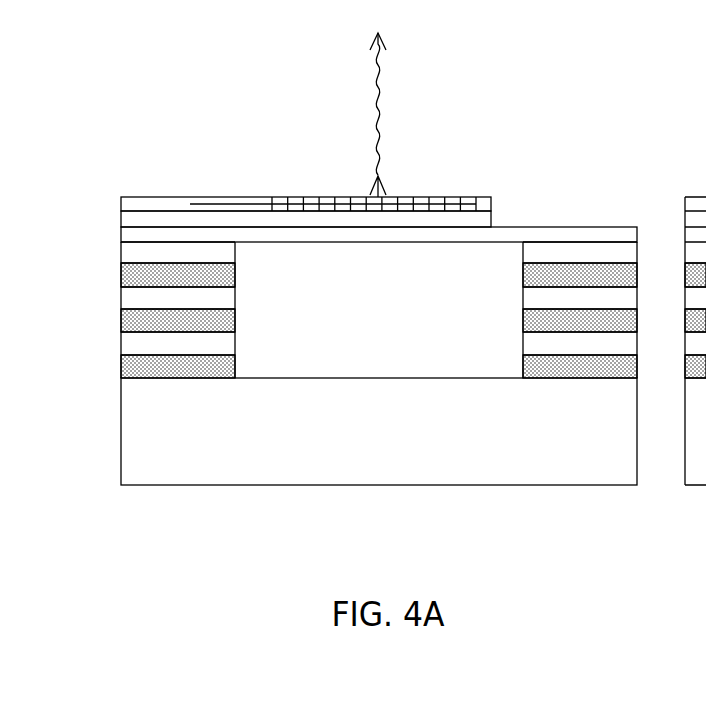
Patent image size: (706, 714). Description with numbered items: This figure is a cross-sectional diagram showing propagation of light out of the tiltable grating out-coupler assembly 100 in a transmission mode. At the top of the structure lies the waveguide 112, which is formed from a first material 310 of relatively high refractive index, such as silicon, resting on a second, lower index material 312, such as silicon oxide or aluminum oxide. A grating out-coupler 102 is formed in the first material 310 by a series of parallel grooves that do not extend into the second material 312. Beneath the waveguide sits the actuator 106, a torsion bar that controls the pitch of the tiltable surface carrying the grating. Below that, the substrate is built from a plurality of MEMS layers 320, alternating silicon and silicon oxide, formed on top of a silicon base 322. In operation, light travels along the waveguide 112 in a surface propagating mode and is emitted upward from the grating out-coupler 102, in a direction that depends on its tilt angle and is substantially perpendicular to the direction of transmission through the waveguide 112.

The tiltable grating out-coupler assembly 100 is at (381, 259).
The grating out-coupler 102 is at (478, 196).
The actuator 106 is at (593, 237).
The waveguide 112 is at (355, 186).
The first material 310 is at (492, 203).
The second material 312 is at (492, 219).
The MEMS layers 320 is at (120, 242).
The base 322 is at (147, 430).